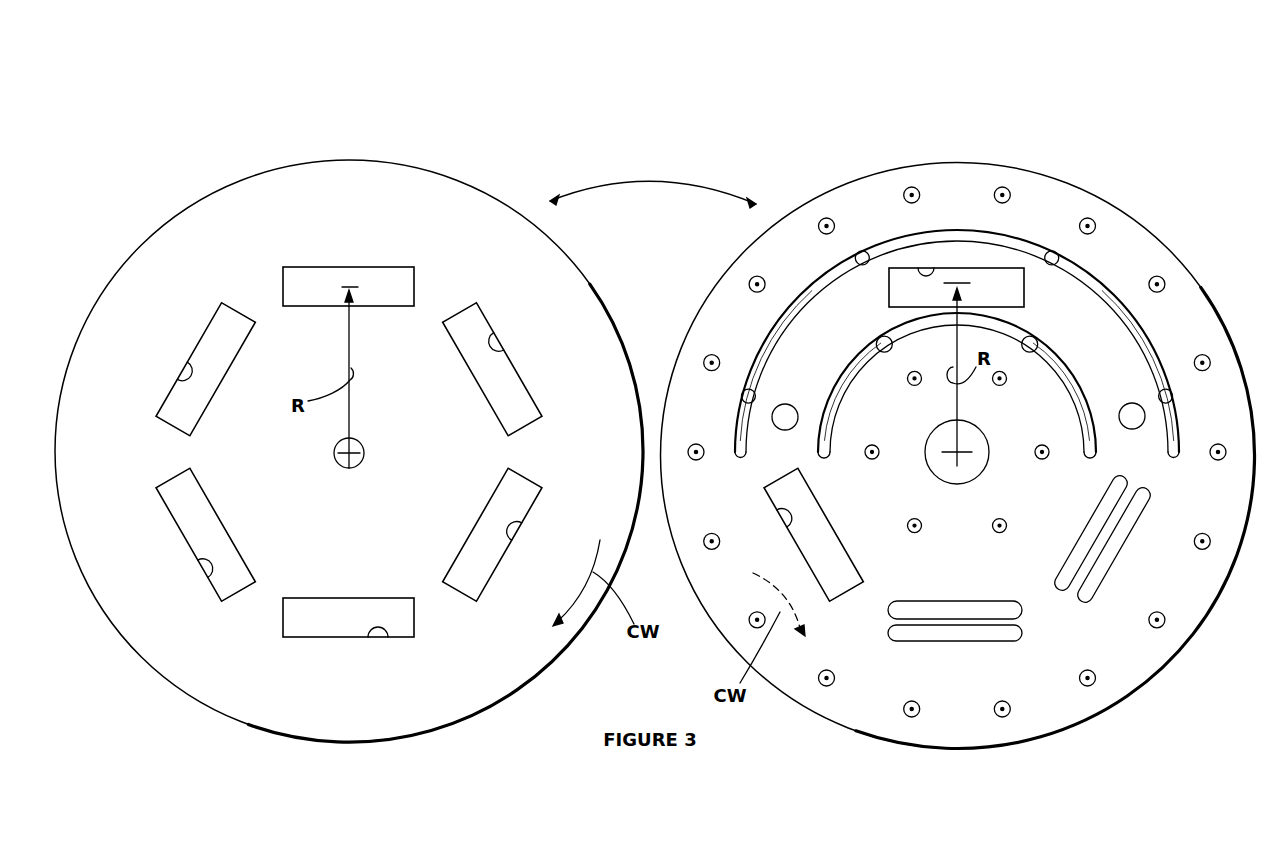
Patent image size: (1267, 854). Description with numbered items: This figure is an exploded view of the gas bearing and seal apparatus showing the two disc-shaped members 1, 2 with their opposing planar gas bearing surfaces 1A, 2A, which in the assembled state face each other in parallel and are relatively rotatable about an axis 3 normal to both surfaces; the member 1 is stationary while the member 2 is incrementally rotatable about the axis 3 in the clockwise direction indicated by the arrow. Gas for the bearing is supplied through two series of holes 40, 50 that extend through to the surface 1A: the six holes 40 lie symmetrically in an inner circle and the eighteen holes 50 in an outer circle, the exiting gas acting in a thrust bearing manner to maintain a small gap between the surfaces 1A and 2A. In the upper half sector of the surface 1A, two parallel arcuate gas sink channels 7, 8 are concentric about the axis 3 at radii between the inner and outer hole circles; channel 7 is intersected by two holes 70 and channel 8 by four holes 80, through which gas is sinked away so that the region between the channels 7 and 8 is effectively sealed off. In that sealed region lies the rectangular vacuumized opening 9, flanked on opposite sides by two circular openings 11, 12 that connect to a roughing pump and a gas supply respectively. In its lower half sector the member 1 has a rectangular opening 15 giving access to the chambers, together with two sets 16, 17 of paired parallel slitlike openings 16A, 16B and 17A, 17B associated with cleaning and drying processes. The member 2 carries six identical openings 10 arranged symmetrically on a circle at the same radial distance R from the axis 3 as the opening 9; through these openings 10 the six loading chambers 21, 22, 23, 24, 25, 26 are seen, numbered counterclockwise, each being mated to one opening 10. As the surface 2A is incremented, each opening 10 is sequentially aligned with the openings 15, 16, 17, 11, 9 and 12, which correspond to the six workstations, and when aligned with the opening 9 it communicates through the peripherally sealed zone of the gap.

The member 1 is at (987, 162).
The gas bearing surface 1A is at (1115, 643).
The member 2 is at (336, 160).
The gas bearing surface 2A is at (490, 665).
The axis 3 is at (362, 447).
The arcuate channel 7 is at (933, 327).
The arcuate channel 8 is at (805, 300).
The vacuumized opening 9 is at (929, 266).
The openings 10 is at (370, 267).
The circular opening 11 is at (1129, 403).
The circular opening 12 is at (797, 407).
The opening 15 is at (774, 510).
The set of slitlike openings 16 is at (955, 618).
The slitlike opening 16A is at (960, 632).
The slitlike opening 16B is at (935, 608).
The set of slitlike openings 17 is at (1105, 552).
The slitlike opening 17A is at (1123, 529).
The slitlike opening 17B is at (1070, 583).
The loading chamber 21 is at (475, 559).
The loading chamber 22 is at (491, 402).
The loading chamber 23 is at (300, 299).
The loading chamber 24 is at (203, 362).
The loading chamber 25 is at (178, 529).
The loading chamber 26 is at (315, 629).
The holes 40 is at (921, 388).
The holes 50 is at (910, 187).
The holes 70 is at (884, 336).
The holes 80 is at (744, 390).